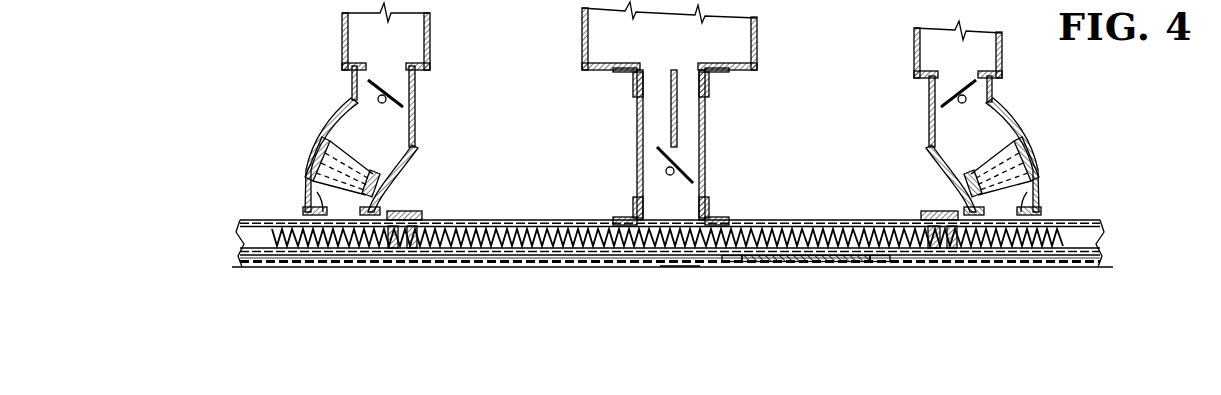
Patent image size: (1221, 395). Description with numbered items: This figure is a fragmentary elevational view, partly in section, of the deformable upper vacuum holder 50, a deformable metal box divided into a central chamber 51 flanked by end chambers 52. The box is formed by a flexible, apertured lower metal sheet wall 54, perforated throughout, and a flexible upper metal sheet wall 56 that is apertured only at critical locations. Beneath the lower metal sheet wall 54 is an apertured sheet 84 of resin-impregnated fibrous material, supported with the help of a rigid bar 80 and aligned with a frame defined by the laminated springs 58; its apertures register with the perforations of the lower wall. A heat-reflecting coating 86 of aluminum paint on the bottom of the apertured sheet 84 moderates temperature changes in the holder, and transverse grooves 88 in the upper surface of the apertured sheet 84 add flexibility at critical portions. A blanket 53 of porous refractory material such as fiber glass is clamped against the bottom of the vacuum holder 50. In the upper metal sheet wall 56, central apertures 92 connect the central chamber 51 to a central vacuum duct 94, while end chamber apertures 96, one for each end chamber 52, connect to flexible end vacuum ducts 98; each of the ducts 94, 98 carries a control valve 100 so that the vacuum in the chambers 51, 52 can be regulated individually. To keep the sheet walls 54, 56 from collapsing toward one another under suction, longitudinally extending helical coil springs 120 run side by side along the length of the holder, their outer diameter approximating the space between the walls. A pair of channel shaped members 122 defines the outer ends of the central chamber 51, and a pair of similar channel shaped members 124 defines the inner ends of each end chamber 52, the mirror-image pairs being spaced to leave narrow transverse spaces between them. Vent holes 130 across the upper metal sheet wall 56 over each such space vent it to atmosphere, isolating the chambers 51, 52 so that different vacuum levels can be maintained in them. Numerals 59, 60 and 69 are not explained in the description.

The deformable upper vacuum holder 50 is at (258, 190).
The central chamber 51 is at (681, 268).
The end chambers 52 is at (304, 268).
The blanket 53 is at (850, 270).
The lower metal sheet wall 54 is at (716, 258).
The upper metal sheet wall 56 is at (490, 219).
The laminated springs 58 is at (507, 6).
The hopper 59 is at (678, 6).
The hopper 60 is at (950, 6).
The hopper 69 is at (462, 6).
The rigid bar 80 is at (836, 6).
The apertured sheet 84 is at (773, 266).
The heat-reflecting coating 86 is at (611, 262).
The transverse grooves 88 is at (346, 262).
The central apertures 92 is at (670, 220).
The central vacuum duct 94 is at (706, 112).
The end chamber apertures 96 is at (317, 194).
The flexible end vacuum ducts 98 is at (322, 128).
The control valve 100 is at (395, 96).
The helical coil springs 120 is at (560, 220).
The channel shaped members 122 is at (417, 248).
The channel shaped members 124 is at (392, 251).
The vent holes 130 is at (410, 211).